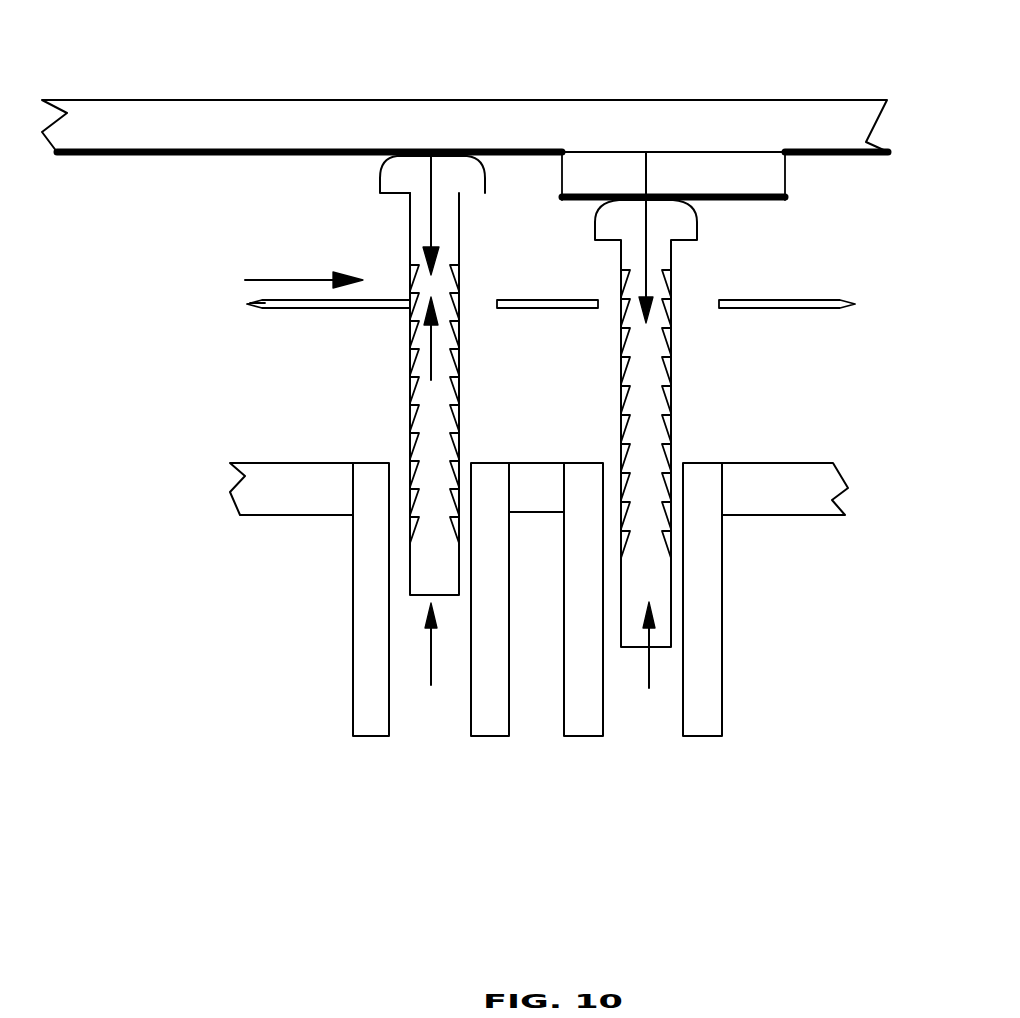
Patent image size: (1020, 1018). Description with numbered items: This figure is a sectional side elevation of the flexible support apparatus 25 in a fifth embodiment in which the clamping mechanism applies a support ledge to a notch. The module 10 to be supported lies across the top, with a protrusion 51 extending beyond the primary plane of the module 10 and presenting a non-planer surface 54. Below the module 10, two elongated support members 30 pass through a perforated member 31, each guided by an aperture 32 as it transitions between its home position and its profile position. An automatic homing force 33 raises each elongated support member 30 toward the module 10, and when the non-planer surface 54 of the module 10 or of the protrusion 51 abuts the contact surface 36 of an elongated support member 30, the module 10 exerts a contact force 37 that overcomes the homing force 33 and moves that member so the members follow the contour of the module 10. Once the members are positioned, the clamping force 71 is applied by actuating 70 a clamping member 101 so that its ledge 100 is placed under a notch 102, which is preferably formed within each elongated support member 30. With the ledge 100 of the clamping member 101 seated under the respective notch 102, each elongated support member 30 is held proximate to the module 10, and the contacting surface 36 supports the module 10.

The module 10 is at (758, 128).
The non-planer surface 54 is at (232, 152).
The protrusion 51 is at (668, 160).
The contact surface 36 is at (430, 150).
The contact force 37 is at (646, 262).
The elongated support member 30 is at (410, 465).
The clamping force 71 is at (418, 348).
The notch 102 is at (672, 395).
The actuation 70 is at (297, 280).
The ledge 100 is at (408, 306).
The clamping member 101 is at (785, 298).
The flexible support apparatus 25 is at (290, 612).
The homing force 33 is at (649, 653).
The aperture 32 is at (683, 465).
The perforated member 31 is at (800, 483).